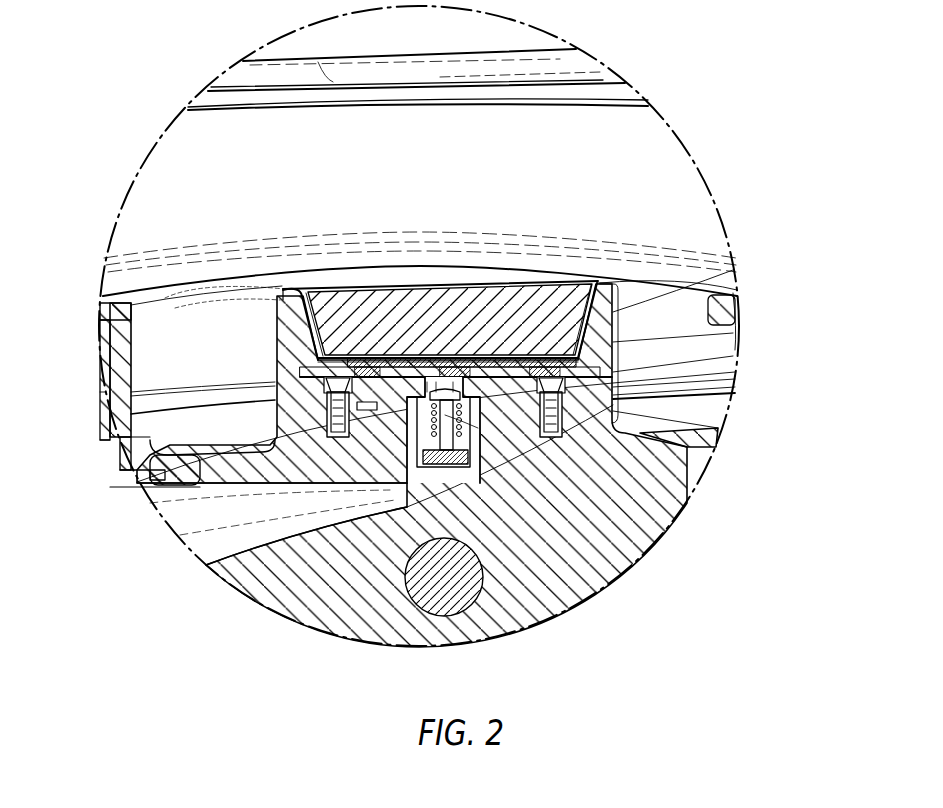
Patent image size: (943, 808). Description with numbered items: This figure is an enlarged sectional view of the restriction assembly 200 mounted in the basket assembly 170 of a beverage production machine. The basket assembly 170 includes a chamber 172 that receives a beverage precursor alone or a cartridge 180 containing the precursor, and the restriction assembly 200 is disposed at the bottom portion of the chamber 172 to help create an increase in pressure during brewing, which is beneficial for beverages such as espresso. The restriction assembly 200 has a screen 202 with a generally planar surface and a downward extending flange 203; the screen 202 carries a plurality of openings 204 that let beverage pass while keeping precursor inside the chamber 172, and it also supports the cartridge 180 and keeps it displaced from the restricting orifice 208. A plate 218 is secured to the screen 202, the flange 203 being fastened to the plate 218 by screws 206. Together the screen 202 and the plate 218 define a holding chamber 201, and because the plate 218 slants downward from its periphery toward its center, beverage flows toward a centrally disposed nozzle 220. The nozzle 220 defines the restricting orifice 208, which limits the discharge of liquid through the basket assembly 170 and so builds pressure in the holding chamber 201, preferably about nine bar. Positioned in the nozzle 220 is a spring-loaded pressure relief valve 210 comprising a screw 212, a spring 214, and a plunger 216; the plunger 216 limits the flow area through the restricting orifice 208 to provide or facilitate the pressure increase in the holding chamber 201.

The basket assembly 170 is at (628, 515).
The chamber 172 is at (595, 305).
The cartridge 180 is at (520, 300).
The restriction assembly 200 is at (292, 378).
The holding chamber 201 is at (515, 356).
The screen 202 is at (560, 362).
The flange 203 is at (560, 371).
The openings 204 is at (437, 345).
The screws 206 is at (140, 481).
The restricting orifice 208 is at (345, 515).
The spring-loaded pressure relief valve 210 is at (558, 585).
The screw 212 is at (473, 425).
The spring 214 is at (365, 407).
The plunger 216 is at (495, 430).
The plate 218 is at (567, 407).
The nozzle 220 is at (430, 465).